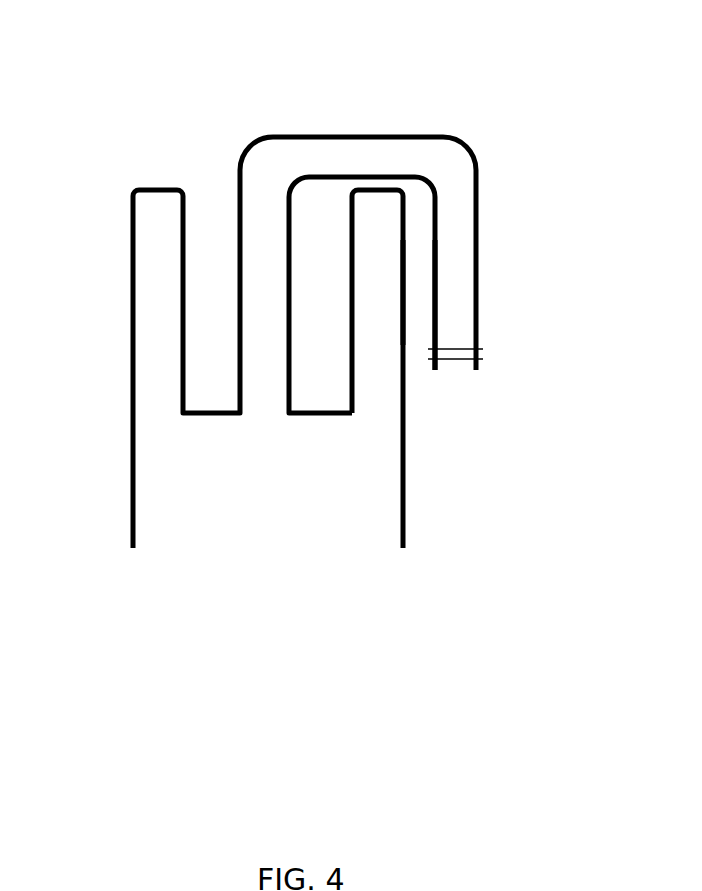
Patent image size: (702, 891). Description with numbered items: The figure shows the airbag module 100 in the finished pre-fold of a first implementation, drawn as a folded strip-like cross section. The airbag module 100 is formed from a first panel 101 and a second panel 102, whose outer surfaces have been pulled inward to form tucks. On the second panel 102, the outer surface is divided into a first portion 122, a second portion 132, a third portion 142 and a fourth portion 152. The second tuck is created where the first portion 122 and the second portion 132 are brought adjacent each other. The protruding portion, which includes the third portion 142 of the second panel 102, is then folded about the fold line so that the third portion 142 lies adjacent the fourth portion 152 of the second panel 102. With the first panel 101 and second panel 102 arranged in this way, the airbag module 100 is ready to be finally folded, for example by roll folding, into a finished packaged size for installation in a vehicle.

The airbag module 100 is at (117, 92).
The first panel 101 is at (132, 440).
The second panel 102 is at (404, 502).
The first portion 122 is at (290, 242).
The second portion 132 is at (350, 332).
The third portion 142 is at (438, 262).
The fourth portion 152 is at (403, 340).